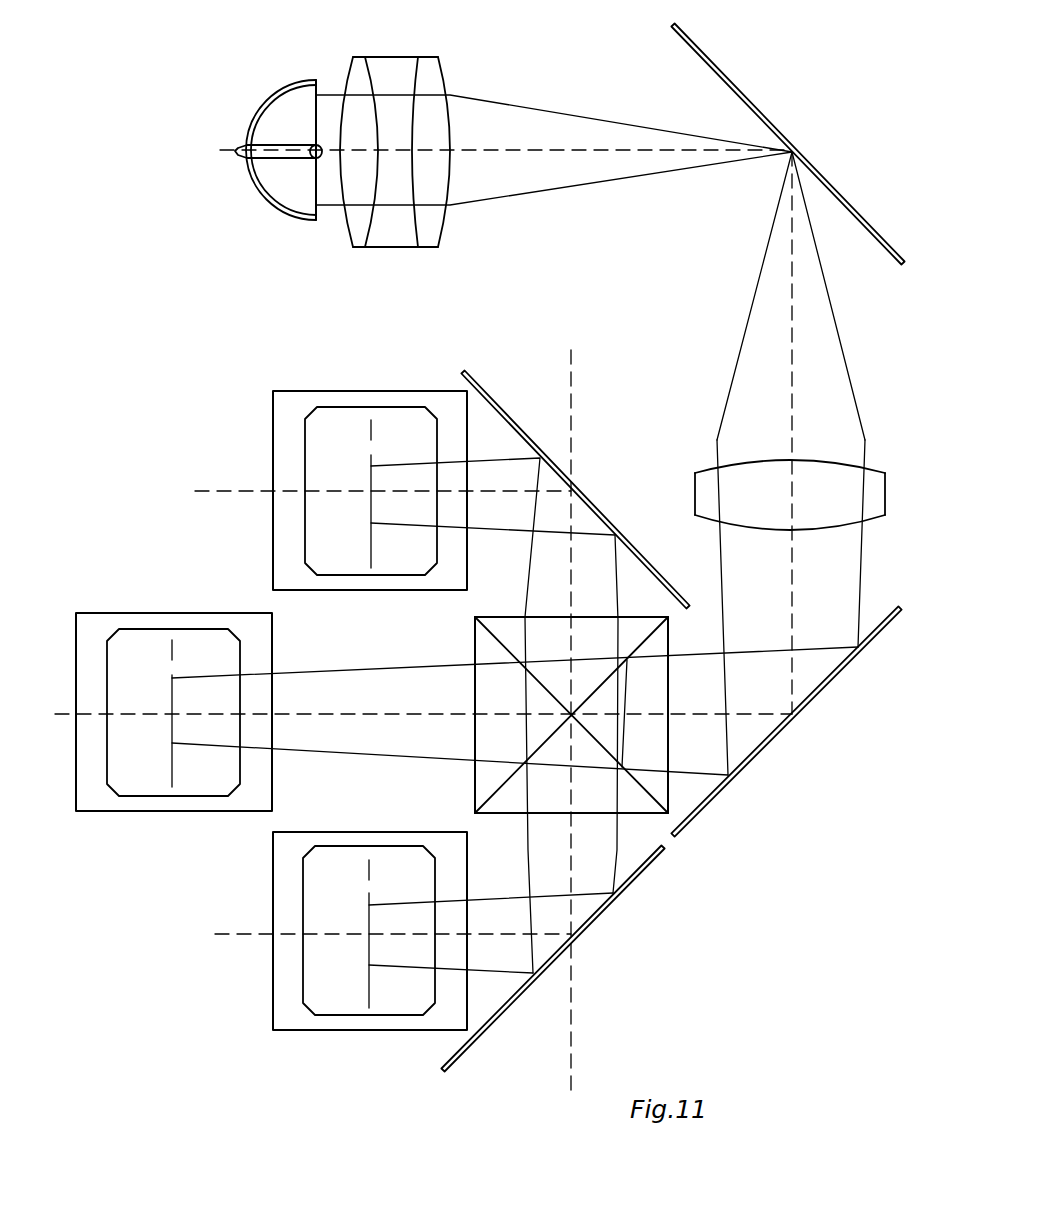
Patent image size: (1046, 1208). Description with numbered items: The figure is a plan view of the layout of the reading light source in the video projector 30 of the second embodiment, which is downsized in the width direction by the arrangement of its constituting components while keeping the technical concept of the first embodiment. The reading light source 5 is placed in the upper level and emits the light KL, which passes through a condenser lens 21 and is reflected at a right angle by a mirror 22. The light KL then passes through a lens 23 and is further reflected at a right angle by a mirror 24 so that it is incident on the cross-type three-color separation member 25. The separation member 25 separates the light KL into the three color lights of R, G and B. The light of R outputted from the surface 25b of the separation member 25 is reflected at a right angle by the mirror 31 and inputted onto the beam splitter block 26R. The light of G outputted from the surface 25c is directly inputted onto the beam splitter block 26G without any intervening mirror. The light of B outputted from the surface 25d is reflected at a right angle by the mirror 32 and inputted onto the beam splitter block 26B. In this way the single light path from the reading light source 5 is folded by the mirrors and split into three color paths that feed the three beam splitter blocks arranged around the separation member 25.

The video projector 30 is at (154, 70).
The reading light source 5 is at (278, 136).
The condenser lens 21 is at (395, 128).
The light KL is at (590, 418).
The mirror 22 is at (787, 144).
The lens 23 is at (768, 461).
The mirror 24 is at (786, 721).
The cross-type 3-color separation member 25 is at (735, 877).
The surface 25b is at (590, 868).
The surface 25c is at (420, 715).
The surface 25d is at (532, 606).
The beam splitter block 26B is at (324, 482).
The beam splitter block 26G is at (174, 740).
The beam splitter block 26R is at (331, 931).
The mirror 31 is at (552, 959).
The mirror 32 is at (575, 483).
The light of B is at (410, 715).
The light of G is at (450, 711).
The light of R is at (410, 933).